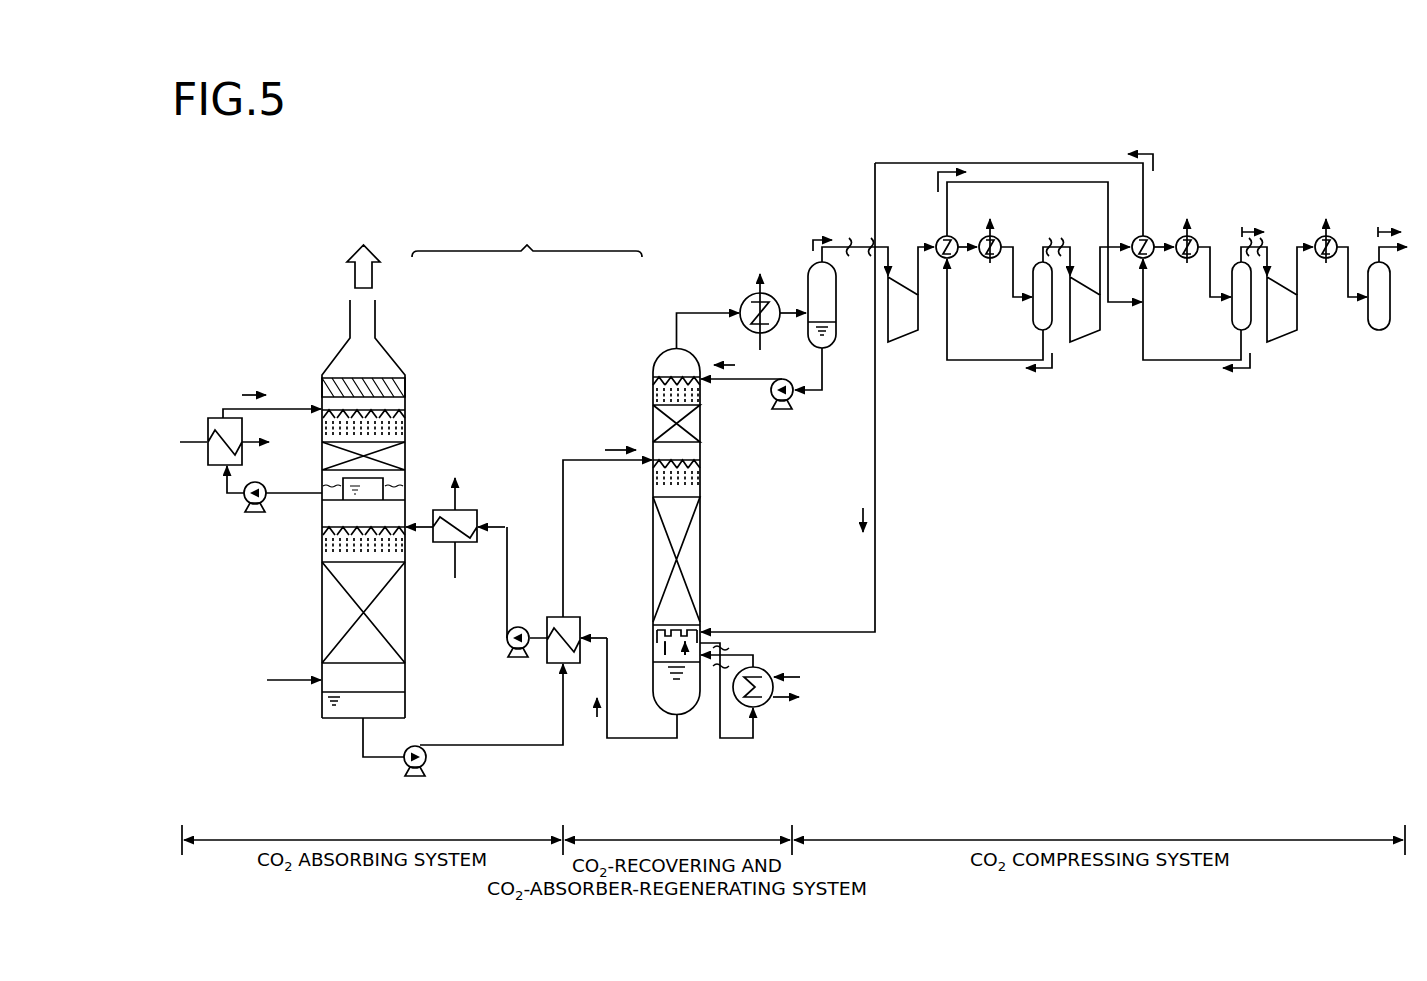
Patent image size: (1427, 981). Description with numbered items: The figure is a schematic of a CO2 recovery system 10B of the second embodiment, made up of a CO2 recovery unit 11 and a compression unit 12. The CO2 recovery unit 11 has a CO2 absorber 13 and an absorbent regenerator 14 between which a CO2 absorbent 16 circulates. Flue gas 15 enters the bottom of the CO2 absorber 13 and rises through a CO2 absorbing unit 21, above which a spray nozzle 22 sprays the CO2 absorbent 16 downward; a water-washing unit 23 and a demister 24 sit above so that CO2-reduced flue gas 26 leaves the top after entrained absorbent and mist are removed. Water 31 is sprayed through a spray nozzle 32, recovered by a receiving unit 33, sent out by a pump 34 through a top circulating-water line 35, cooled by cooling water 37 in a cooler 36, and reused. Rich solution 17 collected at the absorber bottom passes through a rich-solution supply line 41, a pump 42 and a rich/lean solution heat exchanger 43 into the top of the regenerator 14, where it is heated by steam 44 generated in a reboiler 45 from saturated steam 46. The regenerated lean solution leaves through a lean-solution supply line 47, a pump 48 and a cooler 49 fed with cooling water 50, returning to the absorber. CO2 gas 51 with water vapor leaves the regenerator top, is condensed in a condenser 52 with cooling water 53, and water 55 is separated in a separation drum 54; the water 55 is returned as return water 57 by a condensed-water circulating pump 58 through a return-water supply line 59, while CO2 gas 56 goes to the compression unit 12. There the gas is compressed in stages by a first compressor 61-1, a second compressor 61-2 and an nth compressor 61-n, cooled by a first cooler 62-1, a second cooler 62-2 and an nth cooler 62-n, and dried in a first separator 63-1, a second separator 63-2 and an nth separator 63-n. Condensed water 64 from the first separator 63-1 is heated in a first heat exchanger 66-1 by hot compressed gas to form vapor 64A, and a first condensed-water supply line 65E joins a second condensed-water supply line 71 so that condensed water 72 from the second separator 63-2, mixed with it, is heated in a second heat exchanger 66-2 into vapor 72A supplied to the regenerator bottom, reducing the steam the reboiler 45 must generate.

The CO2 recovery system 10B is at (612, 165).
The CO2 recovery unit 11 is at (527, 231).
The compression unit 12 is at (858, 158).
The CO2 absorber 13 is at (399, 357).
The absorbent regenerator 14 is at (646, 357).
The flue gas 15 is at (280, 678).
The CO2 absorbent (lean solution) 16 is at (585, 760).
The rich solution 17 is at (398, 706).
The CO2 absorbing unit 21 is at (330, 604).
The spray nozzle 22 is at (402, 532).
The water-washing unit 23 is at (322, 462).
The demister 24 is at (322, 388).
The CO2-reduced flue gas 26 is at (362, 500).
The water 31 is at (250, 393).
The spray nozzle 32 is at (322, 420).
The receiving unit 33 is at (338, 507).
The pump 34 is at (244, 502).
The top circulating-water line 35 is at (232, 408).
The cooler 36 is at (213, 467).
The cooling water 37 is at (196, 441).
The rich-solution supply line 41 is at (507, 746).
The pump 42 is at (428, 762).
The rich/lean solution heat exchanger 43 is at (572, 617).
The steam 44 is at (656, 642).
The regenerating superheater (reboiler) 45 is at (766, 669).
The saturated steam 46 is at (801, 677).
The lean-solution supply line 47 is at (650, 740).
The pump 48 is at (518, 626).
The cooler 49 is at (470, 510).
The cooling water 50 is at (455, 574).
The CO2 gas 51 is at (690, 313).
The condenser 52 is at (747, 298).
The cooling water 53 is at (760, 321).
The separation drum 54 is at (808, 272).
The water 55 is at (828, 343).
The CO2 gas 56 is at (820, 236).
The return water 57 is at (727, 363).
The condensed-water circulating pump 58 is at (771, 399).
The return-water supply line 59 is at (811, 400).
The first compressor 61-1 is at (906, 345).
The second compressor 61-2 is at (1086, 345).
The nth compressor 61-n is at (1286, 345).
The first cooler 62-1 is at (990, 269).
The second cooler 62-2 is at (1187, 269).
The nth cooler 62-n is at (1326, 269).
The first separator 63-1 is at (1040, 262).
The second separator 63-2 is at (1237, 262).
The nth separator 63-n is at (1381, 332).
The condensed water 64 is at (1040, 372).
The vapor 64A is at (938, 186).
The first condensed-water supply line 65E is at (981, 362).
The first heat exchanger 66-1 is at (951, 239).
The second heat exchanger 66-2 is at (1148, 239).
The second condensed-water supply line 71 is at (876, 440).
The condensed water 72 is at (1234, 372).
The vapor 72A is at (1155, 153).